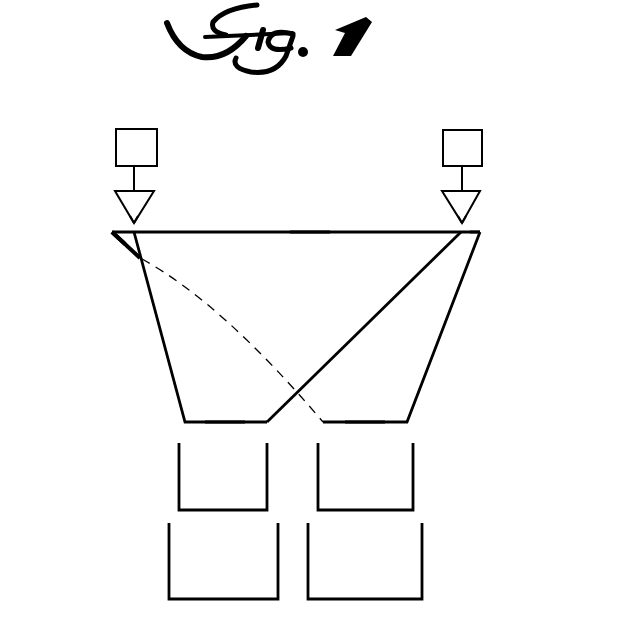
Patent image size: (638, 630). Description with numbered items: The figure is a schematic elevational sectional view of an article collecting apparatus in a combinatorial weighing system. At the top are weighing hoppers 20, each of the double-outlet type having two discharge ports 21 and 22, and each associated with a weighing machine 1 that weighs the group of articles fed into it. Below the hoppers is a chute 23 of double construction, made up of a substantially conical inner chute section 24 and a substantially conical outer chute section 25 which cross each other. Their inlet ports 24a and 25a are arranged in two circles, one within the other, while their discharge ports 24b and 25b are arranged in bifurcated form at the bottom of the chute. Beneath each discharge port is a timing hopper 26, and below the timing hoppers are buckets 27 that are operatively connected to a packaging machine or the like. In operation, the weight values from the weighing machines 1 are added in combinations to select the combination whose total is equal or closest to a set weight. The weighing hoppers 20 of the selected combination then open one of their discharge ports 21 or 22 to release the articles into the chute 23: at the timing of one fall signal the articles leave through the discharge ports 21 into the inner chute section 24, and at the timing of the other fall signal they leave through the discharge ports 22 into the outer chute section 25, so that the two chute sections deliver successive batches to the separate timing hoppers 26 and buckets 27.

The weighing machine 1 is at (117, 138).
The weighing hopper 20 is at (150, 194).
The discharge port 21 is at (140, 220).
The discharge port 22 is at (126, 218).
The chute 23 is at (450, 358).
The inner chute section 24 is at (158, 327).
The inlet port 24a is at (309, 230).
The discharge port 24b is at (225, 425).
The outer chute section 25 is at (448, 322).
The inlet port 25a is at (116, 229).
The discharge port 25b is at (362, 425).
The timing hopper 26 is at (179, 478).
The bucket 27 is at (169, 557).